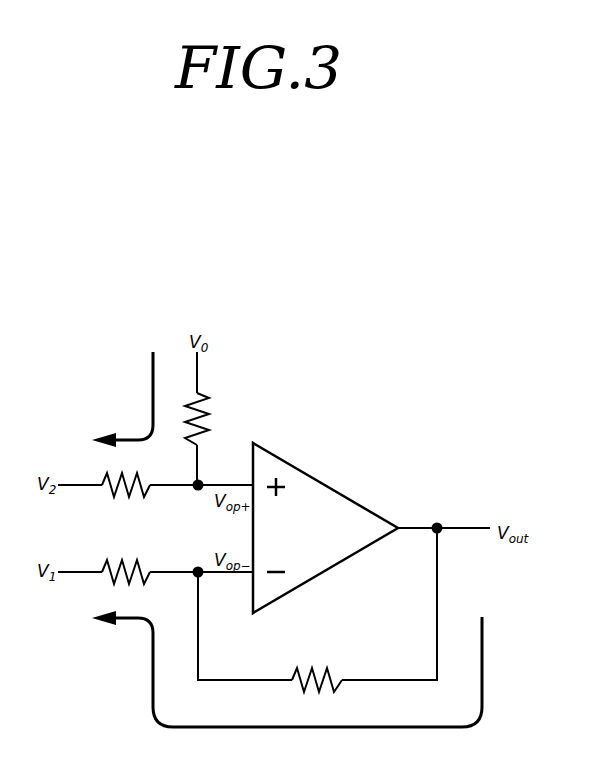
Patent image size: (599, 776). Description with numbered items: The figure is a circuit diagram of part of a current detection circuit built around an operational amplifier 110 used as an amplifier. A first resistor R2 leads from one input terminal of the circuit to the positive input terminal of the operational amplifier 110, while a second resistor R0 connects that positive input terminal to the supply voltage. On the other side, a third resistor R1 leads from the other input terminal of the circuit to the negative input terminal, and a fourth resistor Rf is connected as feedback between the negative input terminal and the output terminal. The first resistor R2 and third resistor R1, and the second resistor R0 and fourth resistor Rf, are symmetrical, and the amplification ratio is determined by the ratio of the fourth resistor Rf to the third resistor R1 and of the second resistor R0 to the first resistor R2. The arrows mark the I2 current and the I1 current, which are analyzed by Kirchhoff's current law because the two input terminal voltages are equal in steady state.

The operational amplifier 110 is at (325, 517).
The second resistor R0 is at (208, 419).
The third resistor R1 is at (126, 585).
The first resistor R2 is at (126, 472).
The fourth resistor Rf is at (317, 693).
The I1 current I1 is at (287, 669).
The I2 current I2 is at (122, 399).